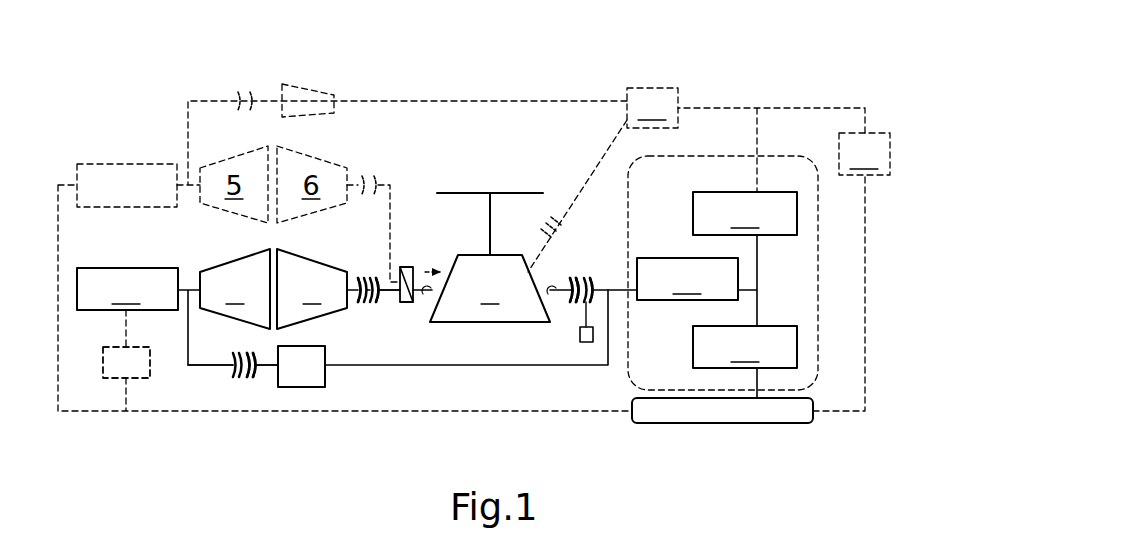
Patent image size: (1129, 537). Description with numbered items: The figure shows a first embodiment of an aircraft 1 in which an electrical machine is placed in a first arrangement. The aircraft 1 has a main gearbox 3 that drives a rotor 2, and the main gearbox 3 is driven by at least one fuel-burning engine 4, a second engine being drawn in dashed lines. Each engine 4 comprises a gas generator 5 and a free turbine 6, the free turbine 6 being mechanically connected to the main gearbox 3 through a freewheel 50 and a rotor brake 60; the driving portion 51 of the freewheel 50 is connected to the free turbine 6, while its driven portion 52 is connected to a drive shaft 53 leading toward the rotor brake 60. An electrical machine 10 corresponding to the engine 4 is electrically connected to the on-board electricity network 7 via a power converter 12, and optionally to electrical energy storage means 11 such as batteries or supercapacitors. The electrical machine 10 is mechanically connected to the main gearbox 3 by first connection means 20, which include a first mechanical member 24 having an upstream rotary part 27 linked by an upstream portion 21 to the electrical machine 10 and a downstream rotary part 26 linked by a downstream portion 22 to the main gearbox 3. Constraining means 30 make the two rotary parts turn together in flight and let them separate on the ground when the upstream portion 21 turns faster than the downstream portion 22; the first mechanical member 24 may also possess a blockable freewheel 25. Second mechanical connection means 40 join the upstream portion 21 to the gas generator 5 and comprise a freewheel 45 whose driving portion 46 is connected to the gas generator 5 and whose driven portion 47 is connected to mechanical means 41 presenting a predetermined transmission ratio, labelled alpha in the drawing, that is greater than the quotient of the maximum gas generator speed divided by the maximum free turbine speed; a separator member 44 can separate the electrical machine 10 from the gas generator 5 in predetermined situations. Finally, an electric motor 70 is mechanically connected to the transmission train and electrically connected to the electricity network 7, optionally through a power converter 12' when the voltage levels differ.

The aircraft 1 is at (822, 83).
The rotor 2 is at (490, 214).
The main gearbox 3 is at (505, 175).
The fuel-burning engine 4 is at (255, 269).
The gas generator 5 is at (235, 289).
The free turbine 6 is at (312, 289).
The electricity network 7 is at (722, 424).
The electrical machine 10 is at (682, 194).
The electrical energy storage means 11 is at (745, 213).
The power converter 12 is at (791, 250).
The power converter 12' is at (115, 404).
The first connection means 20 is at (739, 243).
The upstream portion 21 is at (618, 288).
The downstream portion 22 is at (569, 297).
The first mechanical member 24 is at (572, 262).
The blockable freewheel 25 is at (574, 290).
The downstream rotary part 26 is at (577, 303).
The upstream rotary part 27 is at (592, 294).
The constraining means 30 is at (586, 343).
The second mechanical connection means 40 is at (331, 413).
The mechanical means 41 is at (326, 378).
The separator member 44 is at (245, 388).
The freewheel 45 is at (251, 365).
The driving portion 46 is at (230, 372).
The driven portion 47 is at (266, 376).
The freewheel 50 is at (368, 258).
The driving portion 51 is at (360, 275).
The driven portion 52 is at (384, 302).
The drive shaft 53 is at (392, 296).
The rotor brake 60 is at (405, 266).
The electric motor 70 is at (127, 289).